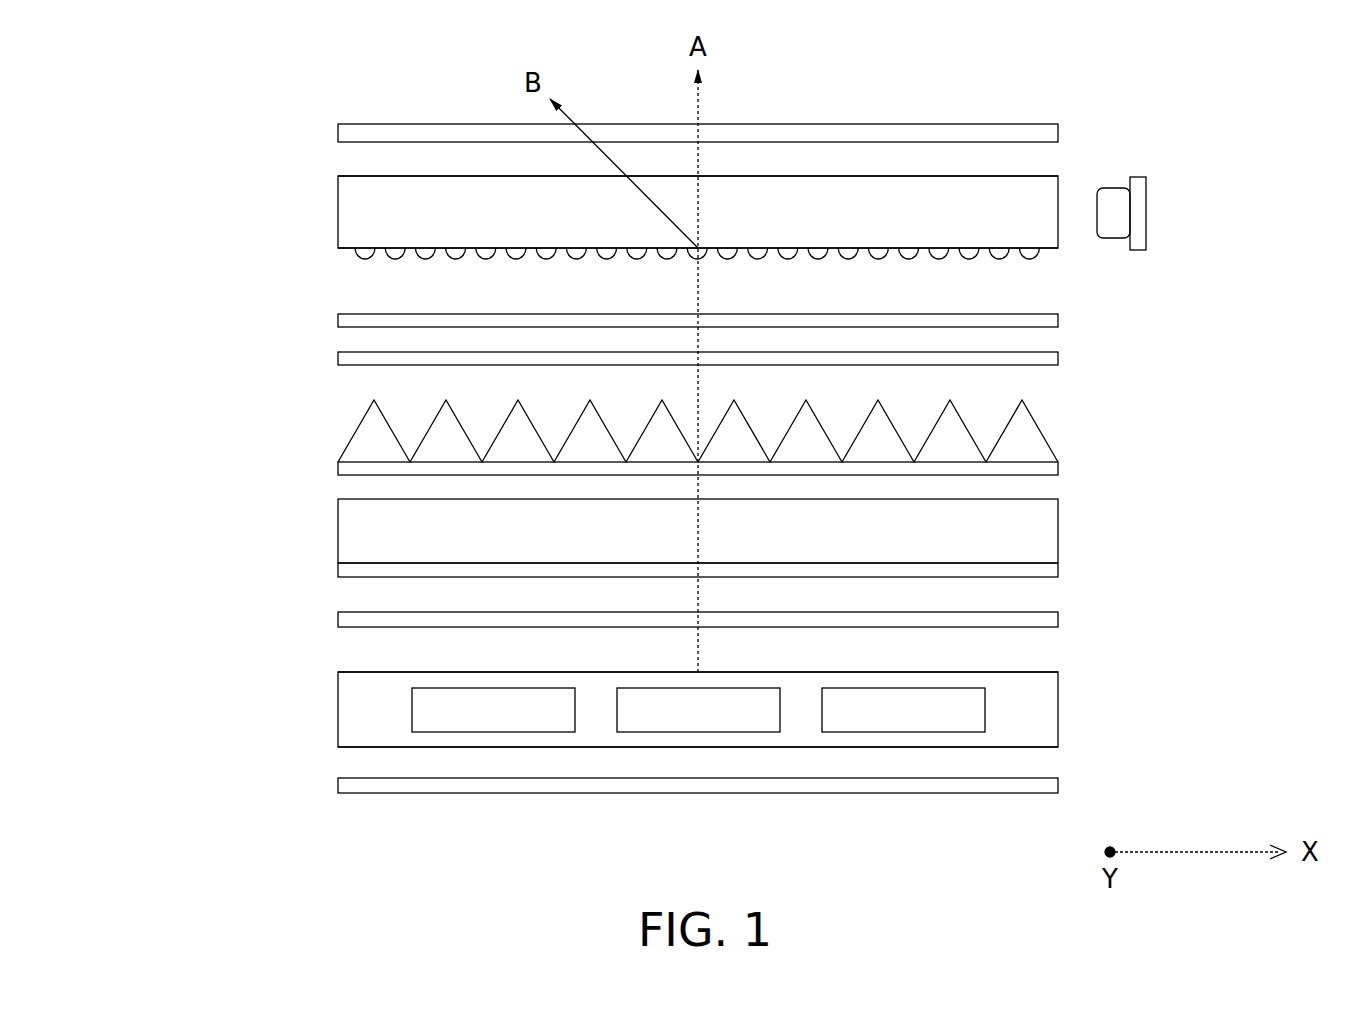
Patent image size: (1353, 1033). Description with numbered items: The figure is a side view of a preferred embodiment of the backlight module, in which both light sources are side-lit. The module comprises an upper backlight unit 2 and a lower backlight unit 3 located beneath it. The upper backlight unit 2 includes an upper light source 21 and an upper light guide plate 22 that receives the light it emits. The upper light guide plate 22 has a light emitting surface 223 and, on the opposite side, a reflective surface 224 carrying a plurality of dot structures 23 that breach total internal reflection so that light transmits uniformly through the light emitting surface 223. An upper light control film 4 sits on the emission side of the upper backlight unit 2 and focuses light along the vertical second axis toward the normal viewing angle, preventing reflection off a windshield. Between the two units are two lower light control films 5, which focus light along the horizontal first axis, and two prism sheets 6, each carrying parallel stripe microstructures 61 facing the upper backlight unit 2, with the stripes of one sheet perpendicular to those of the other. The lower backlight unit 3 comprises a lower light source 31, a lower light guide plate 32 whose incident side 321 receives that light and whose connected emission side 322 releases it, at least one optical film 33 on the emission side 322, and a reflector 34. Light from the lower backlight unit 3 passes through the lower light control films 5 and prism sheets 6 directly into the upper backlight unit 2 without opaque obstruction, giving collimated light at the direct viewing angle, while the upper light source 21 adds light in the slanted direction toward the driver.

The upper backlight unit 2 is at (1273, 47).
The upper light source 21 is at (1119, 186).
The upper light guide plate 22 is at (1052, 174).
The light emitting surface 223 is at (342, 176).
The reflective surface 224 is at (342, 250).
The dot structures 23 is at (1027, 261).
The lower backlight unit 3 is at (175, 637).
The lower light source 31 is at (404, 711).
The lower light guide plate 32 is at (336, 700).
The incident side 321 is at (1038, 722).
The emission side 322 is at (1043, 672).
The optical film 33 is at (338, 620).
The reflector 34 is at (338, 786).
The upper light control film 4 is at (331, 122).
The lower light control films 5 is at (336, 320).
The prism sheets 6 is at (711, 488).
The stripe microstructures 61 is at (1048, 543).